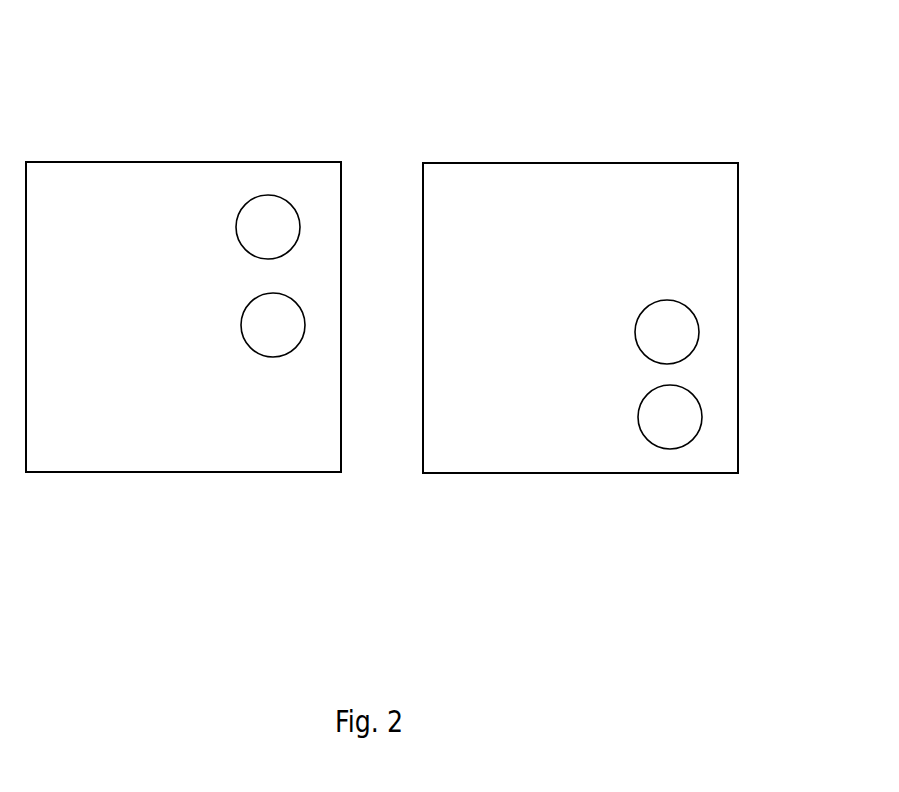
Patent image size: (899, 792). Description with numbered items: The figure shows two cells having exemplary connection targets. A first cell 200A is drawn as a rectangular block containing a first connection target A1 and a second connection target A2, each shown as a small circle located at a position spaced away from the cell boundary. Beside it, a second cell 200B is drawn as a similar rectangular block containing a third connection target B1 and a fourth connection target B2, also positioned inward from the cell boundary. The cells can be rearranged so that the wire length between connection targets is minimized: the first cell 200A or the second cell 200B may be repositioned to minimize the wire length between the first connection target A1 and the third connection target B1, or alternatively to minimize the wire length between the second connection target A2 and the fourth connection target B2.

The first cell 200A is at (183, 160).
The second cell 200B is at (581, 161).
The first connection target A1 is at (233, 227).
The second connection target A2 is at (240, 325).
The third connection target B1 is at (635, 330).
The fourth connection target B2 is at (637, 417).